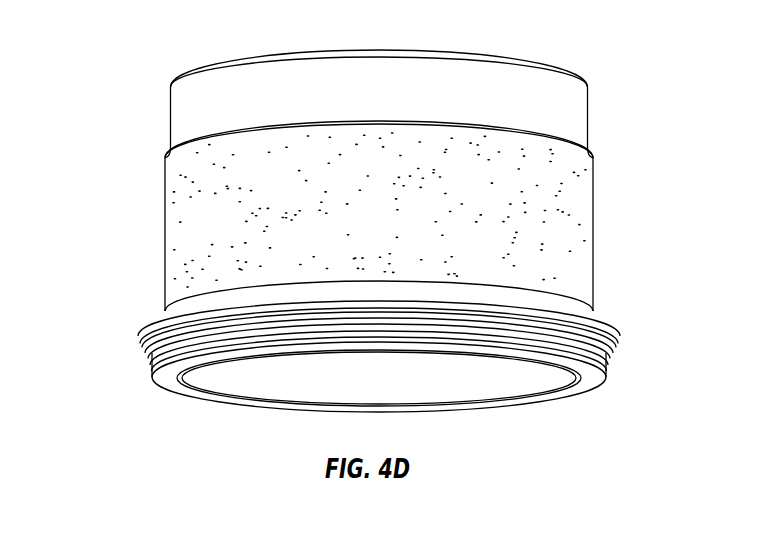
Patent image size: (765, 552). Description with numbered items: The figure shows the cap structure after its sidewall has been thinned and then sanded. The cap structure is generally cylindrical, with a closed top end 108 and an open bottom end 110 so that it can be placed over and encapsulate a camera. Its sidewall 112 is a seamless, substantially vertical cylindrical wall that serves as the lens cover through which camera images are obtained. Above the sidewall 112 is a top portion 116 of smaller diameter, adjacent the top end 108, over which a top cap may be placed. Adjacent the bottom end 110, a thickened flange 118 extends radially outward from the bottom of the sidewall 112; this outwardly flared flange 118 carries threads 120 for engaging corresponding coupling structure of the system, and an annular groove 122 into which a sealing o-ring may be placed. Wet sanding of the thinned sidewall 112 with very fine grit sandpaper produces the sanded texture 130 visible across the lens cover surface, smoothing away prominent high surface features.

The top end 108 is at (477, 53).
The open bottom end 110 is at (528, 416).
The sidewall 112 is at (165, 217).
The top portion 116 is at (588, 120).
The flange 118 is at (600, 322).
The threads 120 is at (603, 362).
The annular groove 122 is at (136, 362).
The sanded texture 130 is at (567, 203).